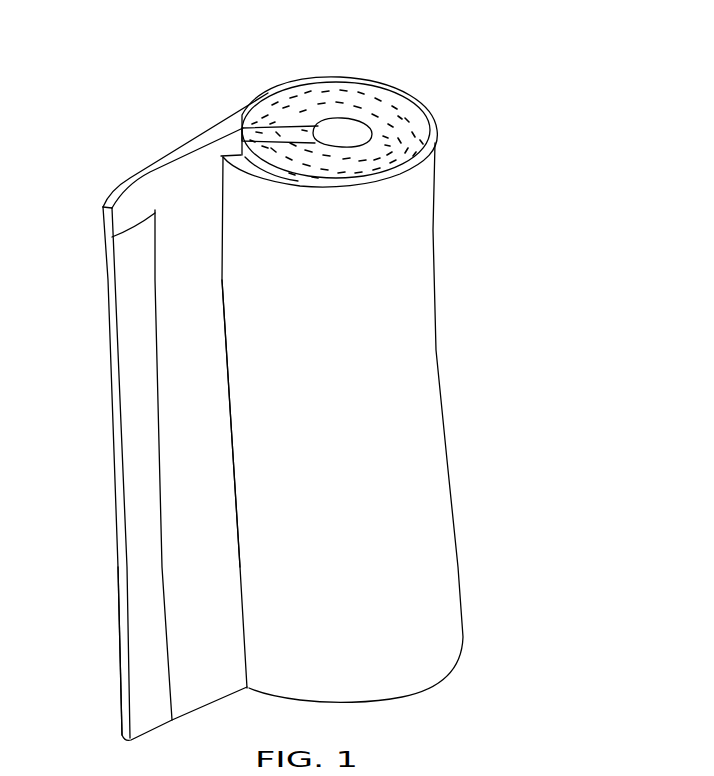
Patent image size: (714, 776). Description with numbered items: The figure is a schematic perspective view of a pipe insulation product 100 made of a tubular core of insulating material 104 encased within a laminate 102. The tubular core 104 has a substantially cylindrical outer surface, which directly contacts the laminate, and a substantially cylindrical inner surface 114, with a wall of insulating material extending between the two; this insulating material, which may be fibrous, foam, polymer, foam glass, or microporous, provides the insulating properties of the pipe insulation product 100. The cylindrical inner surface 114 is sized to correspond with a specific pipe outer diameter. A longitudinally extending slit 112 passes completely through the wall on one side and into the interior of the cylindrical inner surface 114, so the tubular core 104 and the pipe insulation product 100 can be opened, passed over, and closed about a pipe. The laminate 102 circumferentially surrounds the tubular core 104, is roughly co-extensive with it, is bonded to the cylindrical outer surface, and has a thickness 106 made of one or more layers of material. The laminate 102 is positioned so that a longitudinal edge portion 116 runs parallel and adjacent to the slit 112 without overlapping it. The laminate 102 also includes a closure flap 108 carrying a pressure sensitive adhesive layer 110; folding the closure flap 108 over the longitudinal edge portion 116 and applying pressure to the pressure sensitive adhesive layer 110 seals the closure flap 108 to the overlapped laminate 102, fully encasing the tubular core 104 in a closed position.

The pipe insulation product 100 is at (490, 120).
The laminate 102 is at (430, 472).
The tubular core of insulating material 104 is at (436, 143).
The thickness 106 is at (255, 175).
The closure flap 108 is at (167, 195).
The pressure sensitive adhesive layer 110 is at (140, 627).
The longitudinally extending slit 112 is at (263, 132).
The cylindrical inner surface 114 is at (347, 130).
The longitudinal edge portion 116 is at (243, 456).